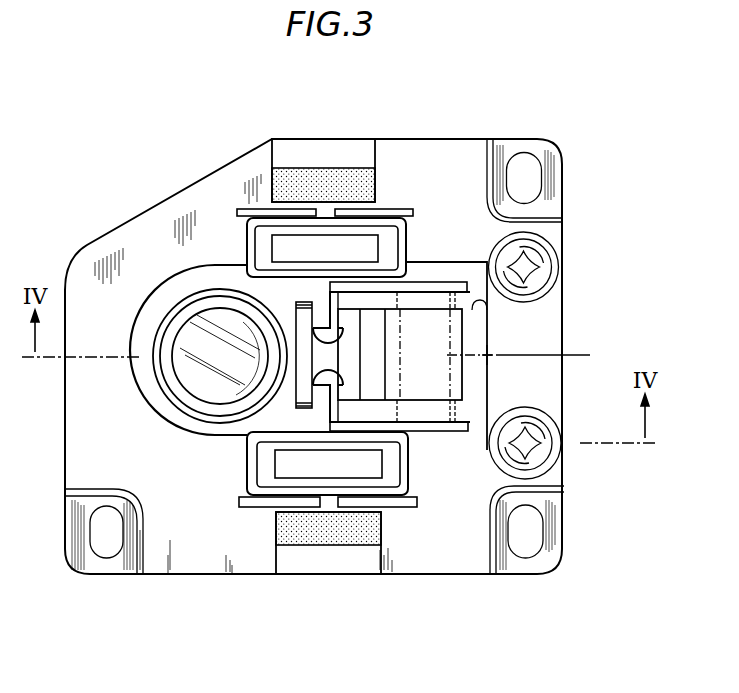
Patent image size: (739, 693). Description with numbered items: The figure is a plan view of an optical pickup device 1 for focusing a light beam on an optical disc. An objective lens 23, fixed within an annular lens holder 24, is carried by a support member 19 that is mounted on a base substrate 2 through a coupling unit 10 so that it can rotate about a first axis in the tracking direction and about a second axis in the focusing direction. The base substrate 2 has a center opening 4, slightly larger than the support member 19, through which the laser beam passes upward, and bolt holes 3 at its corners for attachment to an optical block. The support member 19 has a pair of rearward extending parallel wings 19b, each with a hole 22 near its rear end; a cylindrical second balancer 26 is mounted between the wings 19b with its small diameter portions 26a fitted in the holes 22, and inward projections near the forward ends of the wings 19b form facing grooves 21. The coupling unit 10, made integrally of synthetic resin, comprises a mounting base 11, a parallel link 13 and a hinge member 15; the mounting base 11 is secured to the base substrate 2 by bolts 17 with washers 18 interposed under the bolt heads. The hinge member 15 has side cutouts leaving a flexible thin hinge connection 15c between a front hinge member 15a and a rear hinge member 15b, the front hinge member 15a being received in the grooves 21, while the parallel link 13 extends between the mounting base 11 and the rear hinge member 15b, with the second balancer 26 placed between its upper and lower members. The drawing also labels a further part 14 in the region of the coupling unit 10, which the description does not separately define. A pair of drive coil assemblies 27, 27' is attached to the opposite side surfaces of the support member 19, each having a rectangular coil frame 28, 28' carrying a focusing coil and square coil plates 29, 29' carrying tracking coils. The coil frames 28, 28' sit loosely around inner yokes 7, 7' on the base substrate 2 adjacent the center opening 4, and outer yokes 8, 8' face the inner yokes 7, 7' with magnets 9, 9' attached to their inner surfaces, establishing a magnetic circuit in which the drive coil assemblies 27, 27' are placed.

The optical pickup device 1 is at (570, 208).
The base substrate 2 is at (517, 576).
The bolt holes 3 is at (527, 168).
The center opening 4 is at (151, 401).
The inner yoke 7 is at (325, 179).
The inner yoke 7' is at (317, 536).
The outer yoke 8 is at (323, 149).
The outer yoke 8' is at (342, 567).
The magnet 9 is at (317, 149).
The magnet 9' is at (328, 567).
The coupling unit 10 is at (528, 335).
The mounting base 11 is at (558, 332).
The parallel link 13 is at (442, 388).
The retaining plate 14 is at (550, 354).
The hinge member 15 is at (333, 388).
The front hinge member 15a is at (300, 410).
The rear hinge member 15b is at (347, 322).
The hinge connection 15c is at (323, 384).
The bolts 17 is at (541, 254).
The washers 18 is at (551, 291).
The support member 19 is at (167, 305).
The parallel wings 19b is at (381, 288).
The grooves 21 is at (298, 314).
The hole 22 is at (457, 352).
The objective lens 23 is at (190, 366).
The lens holder 24 is at (197, 409).
The second balancer 26 is at (443, 298).
The small diameter portions 26a is at (427, 284).
The drive coil assembly 27 is at (373, 183).
The drive coil assembly 27' is at (381, 532).
The coil frame 28 is at (288, 215).
The coil frame 28' is at (301, 480).
The coil plate 29 is at (336, 159).
The coil plate 29' is at (347, 560).